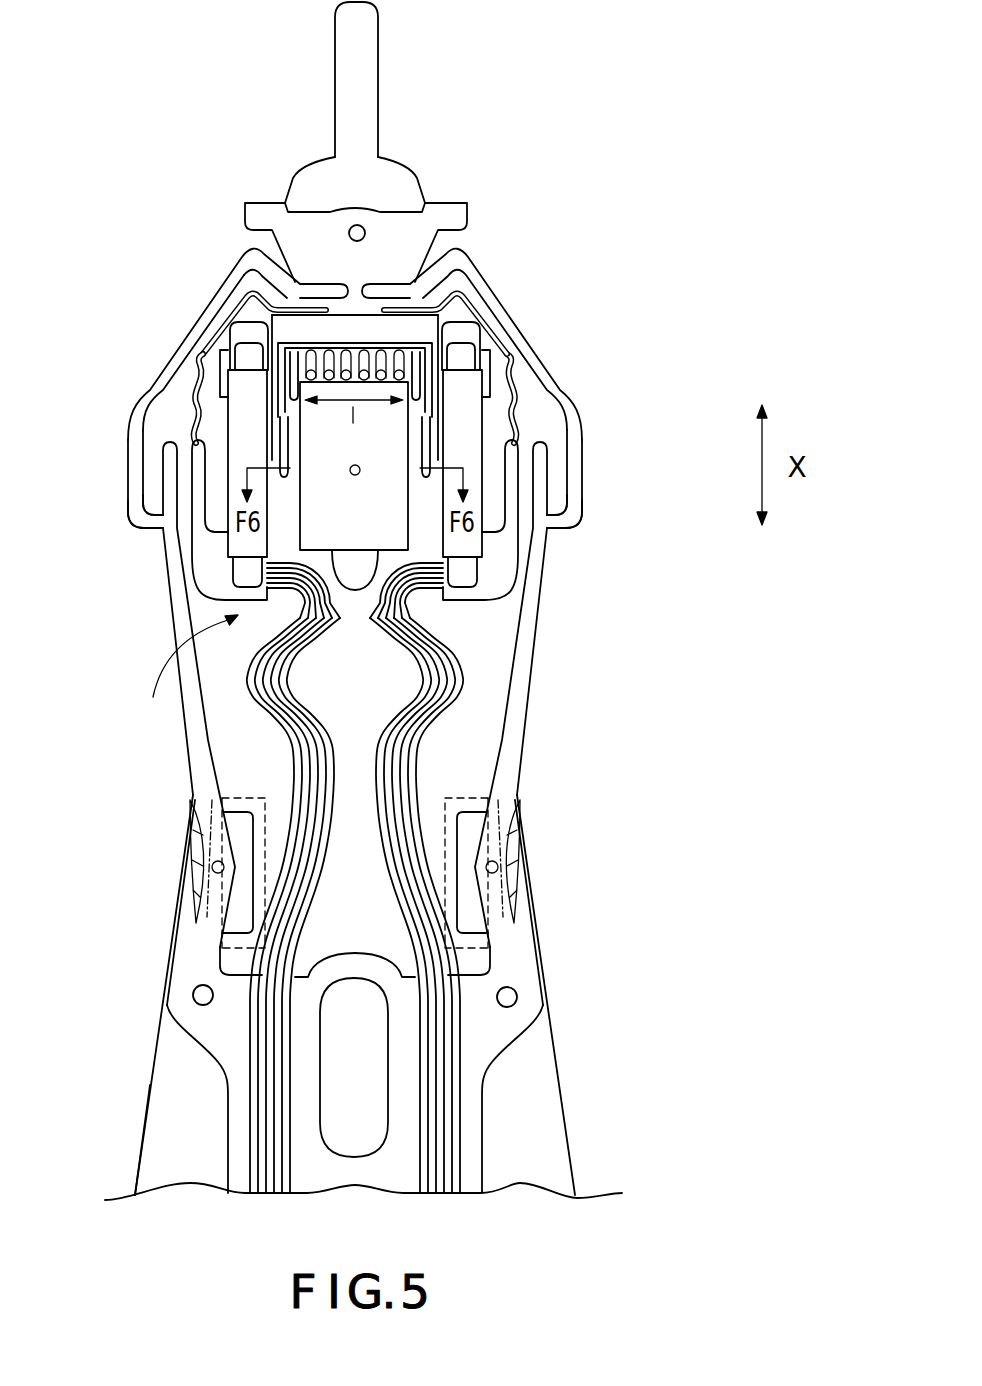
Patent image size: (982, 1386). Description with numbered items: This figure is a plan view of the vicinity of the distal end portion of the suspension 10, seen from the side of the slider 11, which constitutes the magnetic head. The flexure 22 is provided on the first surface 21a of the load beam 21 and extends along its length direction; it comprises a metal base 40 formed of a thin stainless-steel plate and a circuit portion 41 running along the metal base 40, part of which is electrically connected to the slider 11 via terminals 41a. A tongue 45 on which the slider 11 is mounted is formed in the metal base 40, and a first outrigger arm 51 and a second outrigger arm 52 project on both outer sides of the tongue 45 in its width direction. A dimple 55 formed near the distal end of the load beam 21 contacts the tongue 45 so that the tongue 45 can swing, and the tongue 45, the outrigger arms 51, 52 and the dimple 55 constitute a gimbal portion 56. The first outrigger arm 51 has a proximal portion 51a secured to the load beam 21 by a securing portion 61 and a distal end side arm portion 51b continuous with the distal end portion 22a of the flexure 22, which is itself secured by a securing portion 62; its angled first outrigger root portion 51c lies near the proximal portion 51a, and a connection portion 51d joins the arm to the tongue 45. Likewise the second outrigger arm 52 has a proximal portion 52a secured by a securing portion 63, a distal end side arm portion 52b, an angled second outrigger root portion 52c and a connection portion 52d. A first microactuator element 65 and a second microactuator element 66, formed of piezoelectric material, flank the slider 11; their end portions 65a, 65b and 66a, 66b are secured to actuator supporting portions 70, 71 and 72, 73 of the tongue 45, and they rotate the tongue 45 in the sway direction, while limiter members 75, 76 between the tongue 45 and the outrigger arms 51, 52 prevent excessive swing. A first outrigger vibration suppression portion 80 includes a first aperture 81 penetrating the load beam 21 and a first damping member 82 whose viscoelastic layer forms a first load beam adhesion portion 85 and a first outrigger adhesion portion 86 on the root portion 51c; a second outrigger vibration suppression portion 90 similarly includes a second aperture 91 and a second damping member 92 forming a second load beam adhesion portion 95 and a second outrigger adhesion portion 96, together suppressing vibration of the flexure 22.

The suspension 10 is at (612, 670).
The slider 11 is at (298, 447).
The load beam 21 is at (152, 1062).
The first surface 21a is at (153, 1120).
The flexure 22 is at (508, 1048).
The distal end portion 22a is at (302, 228).
The metal base 40 is at (354, 1160).
The circuit portion 41 is at (387, 717).
The terminals 41a is at (364, 345).
The tongue 45 is at (413, 450).
The first outrigger arm 51 is at (188, 747).
The proximal portion 51a is at (190, 968).
The distal end side arm portion 51b is at (175, 342).
The first outrigger root portion 51c is at (200, 895).
The connection portion 51d is at (183, 440).
The second outrigger arm 52 is at (522, 747).
The proximal portion 52a is at (520, 968).
The distal end side arm portion 52b is at (517, 337).
The second outrigger root portion 52c is at (510, 895).
The connection portion 52d is at (527, 440).
The dimple 55 is at (355, 478).
The gimbal portion 56 is at (180, 664).
The securing portion 61 is at (192, 995).
The securing portion 62 is at (360, 226).
The securing portion 63 is at (518, 995).
The first microactuator element 65 is at (240, 423).
The end portion 65a is at (240, 547).
The end portion 65b is at (232, 383).
The second microactuator element 66 is at (472, 422).
The end portion 66a is at (470, 547).
The end portion 66b is at (470, 380).
The actuator supporting portion 70 is at (220, 545).
The actuator supporting portion 71 is at (203, 338).
The actuator supporting portion 72 is at (490, 545).
The actuator supporting portion 73 is at (490, 333).
The limiter member 75 is at (192, 335).
The limiter member 76 is at (535, 402).
The first outrigger vibration suppression portion 80 is at (178, 830).
The first aperture 81 is at (253, 826).
The first damping member 82 is at (237, 923).
The first load beam adhesion portion 85 is at (236, 800).
The first outrigger adhesion portion 86 is at (237, 858).
The second outrigger vibration suppression portion 90 is at (532, 830).
The second aperture 91 is at (457, 826).
The second damping member 92 is at (473, 923).
The second load beam adhesion portion 95 is at (473, 800).
The second outrigger adhesion portion 96 is at (473, 858).